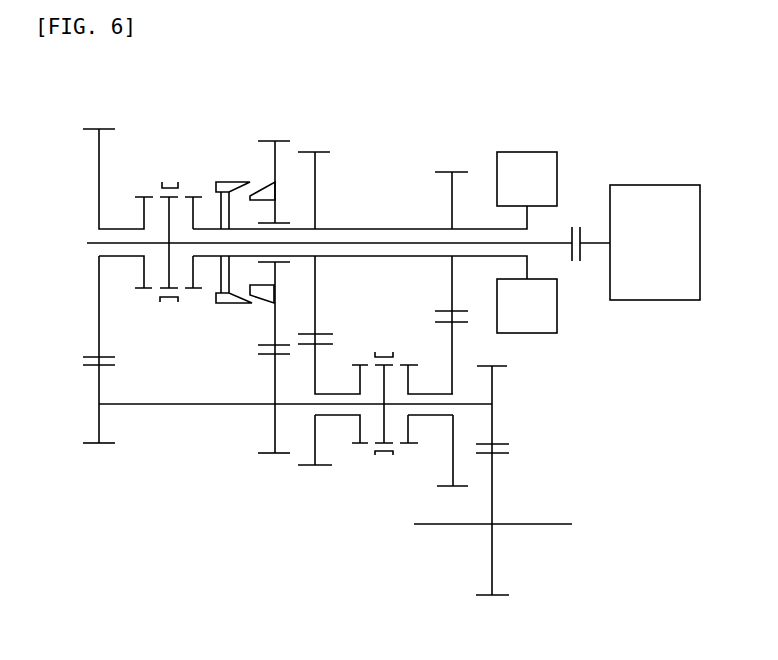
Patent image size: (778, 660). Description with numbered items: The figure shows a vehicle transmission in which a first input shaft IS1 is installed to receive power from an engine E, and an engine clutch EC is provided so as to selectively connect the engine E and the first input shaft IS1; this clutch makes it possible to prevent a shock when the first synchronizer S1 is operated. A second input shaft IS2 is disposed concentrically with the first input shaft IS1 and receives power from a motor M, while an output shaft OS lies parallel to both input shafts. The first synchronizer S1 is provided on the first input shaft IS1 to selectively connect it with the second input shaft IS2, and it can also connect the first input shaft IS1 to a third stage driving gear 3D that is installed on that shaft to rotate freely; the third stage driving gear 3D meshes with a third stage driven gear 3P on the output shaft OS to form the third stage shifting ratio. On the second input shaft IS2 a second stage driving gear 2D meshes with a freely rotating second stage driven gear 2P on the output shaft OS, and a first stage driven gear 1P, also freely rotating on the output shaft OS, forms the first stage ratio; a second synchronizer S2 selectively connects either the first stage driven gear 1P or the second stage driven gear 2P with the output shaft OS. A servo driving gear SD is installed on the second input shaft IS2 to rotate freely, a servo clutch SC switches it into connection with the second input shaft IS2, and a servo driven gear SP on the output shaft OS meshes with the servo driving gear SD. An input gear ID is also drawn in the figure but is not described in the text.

The first input shaft IS1 is at (92, 242).
The second input shaft IS2 is at (367, 229).
The output shaft OS is at (178, 405).
The engine E is at (655, 242).
The engine clutch EC is at (575, 226).
The motor M is at (527, 242).
The input drive gear ID is at (445, 172).
The third stage driving gear 3D is at (103, 128).
The second stage driving gear 2D is at (327, 150).
The servo driving gear SD is at (282, 140).
The servo clutch SC is at (224, 305).
The first synchronizer S1 is at (168, 181).
The second synchronizer S2 is at (383, 350).
The third stage driven gear 3P is at (95, 445).
The second stage driven gear 2P is at (325, 467).
The first stage driven gear 1P is at (440, 488).
The servo driven gear SP is at (272, 455).